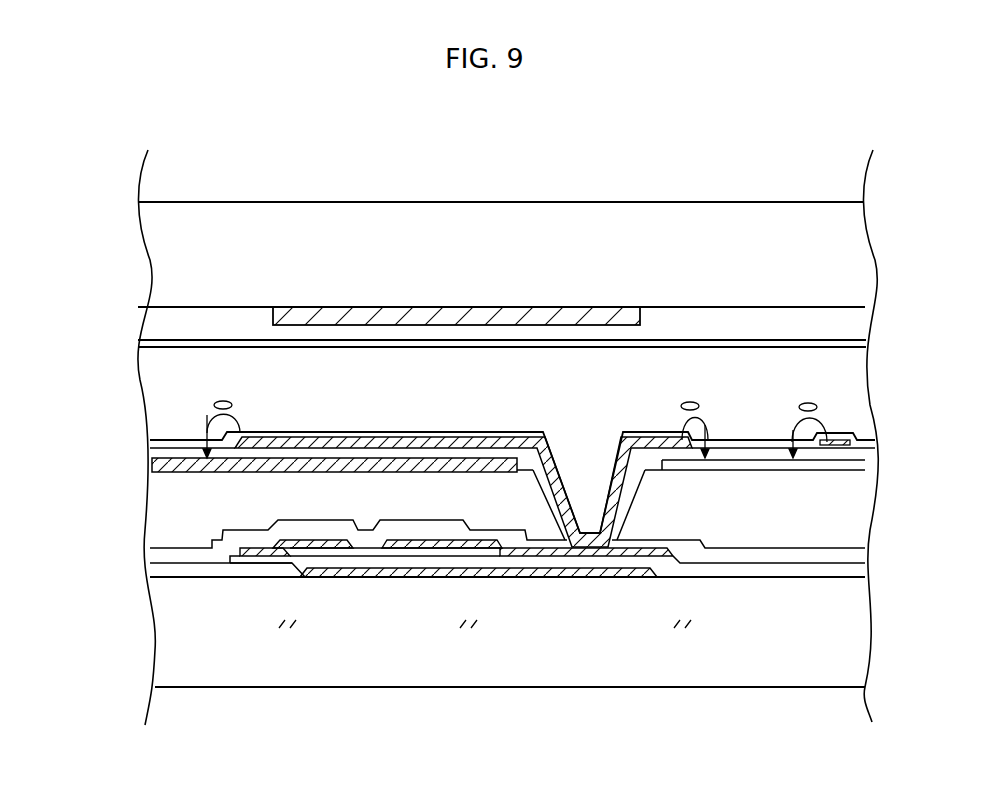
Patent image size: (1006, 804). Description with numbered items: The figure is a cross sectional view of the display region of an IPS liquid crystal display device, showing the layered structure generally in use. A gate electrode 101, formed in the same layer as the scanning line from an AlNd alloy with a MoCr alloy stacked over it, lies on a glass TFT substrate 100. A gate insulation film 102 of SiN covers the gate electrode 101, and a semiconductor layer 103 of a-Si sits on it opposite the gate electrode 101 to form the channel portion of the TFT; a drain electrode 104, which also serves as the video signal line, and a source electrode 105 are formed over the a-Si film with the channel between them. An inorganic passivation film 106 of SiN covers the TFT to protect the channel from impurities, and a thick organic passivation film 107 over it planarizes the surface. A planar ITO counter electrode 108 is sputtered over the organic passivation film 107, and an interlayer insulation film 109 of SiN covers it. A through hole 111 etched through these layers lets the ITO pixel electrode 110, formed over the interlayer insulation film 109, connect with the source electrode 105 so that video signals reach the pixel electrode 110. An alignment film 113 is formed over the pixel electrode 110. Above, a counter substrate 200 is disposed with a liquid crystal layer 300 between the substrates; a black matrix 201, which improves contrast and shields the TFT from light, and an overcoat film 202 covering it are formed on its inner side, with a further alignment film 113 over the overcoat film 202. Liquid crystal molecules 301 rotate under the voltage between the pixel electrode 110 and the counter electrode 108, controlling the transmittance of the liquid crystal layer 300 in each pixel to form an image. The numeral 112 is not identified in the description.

The TFT substrate 100 is at (222, 643).
The gate electrode 101 is at (368, 577).
The gate insulation film 102 is at (147, 573).
The semiconductor layer 103 is at (430, 548).
The drain electrode 104 is at (318, 557).
The source electrode 105 is at (492, 543).
The inorganic passivation film 106 is at (150, 551).
The organic passivation film 107 is at (157, 518).
The counter electrode 108 is at (157, 465).
The interlayer insulation film 109 is at (163, 450).
The pixel electrode 110 is at (473, 432).
The through hole 111 is at (583, 458).
The pixel electrode opening 112 is at (733, 437).
The alignment film 113 is at (853, 342).
The counter substrate 200 is at (847, 258).
The black matrix 201 is at (602, 312).
The overcoat film 202 is at (847, 320).
The liquid crystal layer 300 is at (860, 405).
The liquid crystal molecules 301 is at (802, 404).